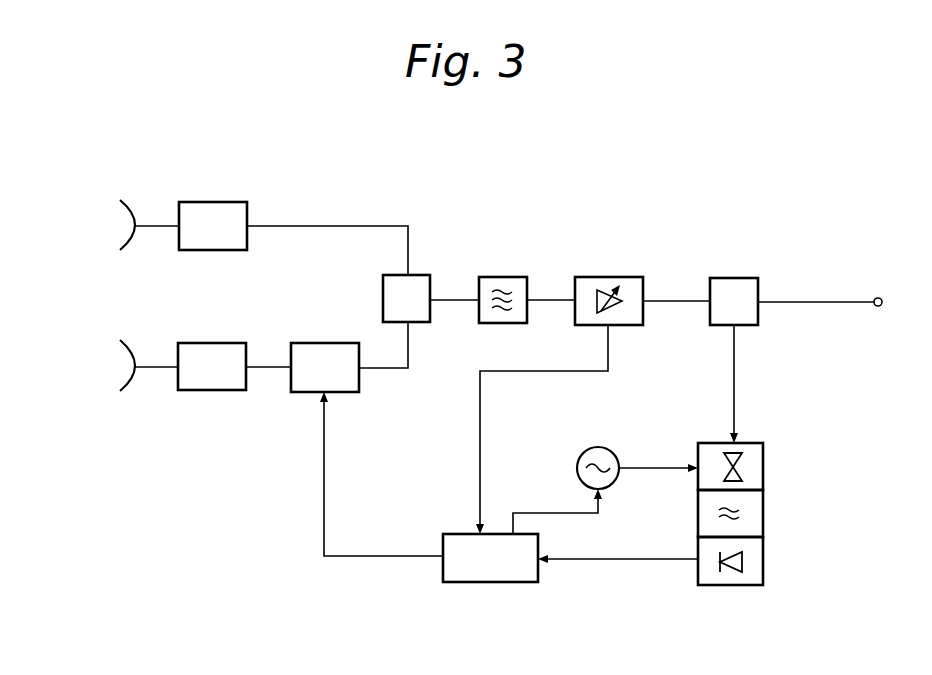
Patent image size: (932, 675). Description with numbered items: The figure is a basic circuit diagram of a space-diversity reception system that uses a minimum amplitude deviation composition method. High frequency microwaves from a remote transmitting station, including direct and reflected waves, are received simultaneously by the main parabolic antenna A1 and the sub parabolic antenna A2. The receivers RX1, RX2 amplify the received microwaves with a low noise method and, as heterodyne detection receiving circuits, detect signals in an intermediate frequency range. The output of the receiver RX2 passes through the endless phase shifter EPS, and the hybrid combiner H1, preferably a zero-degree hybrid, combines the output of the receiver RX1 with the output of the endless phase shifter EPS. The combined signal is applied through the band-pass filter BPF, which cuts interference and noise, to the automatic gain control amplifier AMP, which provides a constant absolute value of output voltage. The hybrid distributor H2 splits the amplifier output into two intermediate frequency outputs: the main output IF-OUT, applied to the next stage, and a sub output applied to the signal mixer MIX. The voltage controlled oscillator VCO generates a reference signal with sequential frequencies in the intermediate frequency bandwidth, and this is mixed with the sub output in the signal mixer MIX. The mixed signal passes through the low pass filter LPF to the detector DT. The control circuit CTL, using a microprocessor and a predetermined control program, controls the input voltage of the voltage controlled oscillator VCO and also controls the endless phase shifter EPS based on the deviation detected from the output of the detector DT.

The main parabolic antenna A1 is at (111, 225).
The receiver RX1 is at (213, 226).
The sub parabolic antenna A2 is at (111, 365).
The receiver RX2 is at (212, 366).
The endless phase shifter EPS is at (325, 367).
The hybrid combiner H1 is at (406, 298).
The band-pass filter BPF is at (500, 282).
The automatic gain control amplifier AMP is at (609, 283).
The hybrid distributor H2 is at (734, 301).
The main output IF-OUT is at (903, 321).
The voltage controlled oscillator VCO is at (599, 454).
The signal mixer MIX is at (757, 466).
The low pass filter LPF is at (756, 513).
The detector DT is at (752, 561).
The control circuit CTL is at (490, 558).